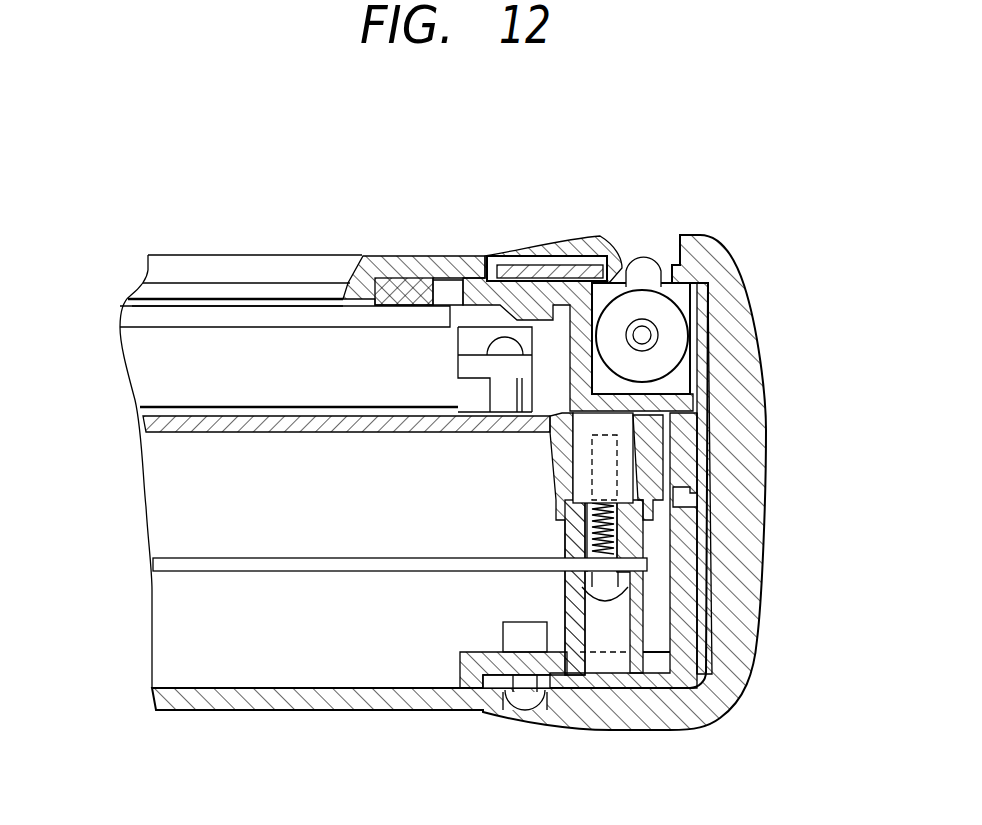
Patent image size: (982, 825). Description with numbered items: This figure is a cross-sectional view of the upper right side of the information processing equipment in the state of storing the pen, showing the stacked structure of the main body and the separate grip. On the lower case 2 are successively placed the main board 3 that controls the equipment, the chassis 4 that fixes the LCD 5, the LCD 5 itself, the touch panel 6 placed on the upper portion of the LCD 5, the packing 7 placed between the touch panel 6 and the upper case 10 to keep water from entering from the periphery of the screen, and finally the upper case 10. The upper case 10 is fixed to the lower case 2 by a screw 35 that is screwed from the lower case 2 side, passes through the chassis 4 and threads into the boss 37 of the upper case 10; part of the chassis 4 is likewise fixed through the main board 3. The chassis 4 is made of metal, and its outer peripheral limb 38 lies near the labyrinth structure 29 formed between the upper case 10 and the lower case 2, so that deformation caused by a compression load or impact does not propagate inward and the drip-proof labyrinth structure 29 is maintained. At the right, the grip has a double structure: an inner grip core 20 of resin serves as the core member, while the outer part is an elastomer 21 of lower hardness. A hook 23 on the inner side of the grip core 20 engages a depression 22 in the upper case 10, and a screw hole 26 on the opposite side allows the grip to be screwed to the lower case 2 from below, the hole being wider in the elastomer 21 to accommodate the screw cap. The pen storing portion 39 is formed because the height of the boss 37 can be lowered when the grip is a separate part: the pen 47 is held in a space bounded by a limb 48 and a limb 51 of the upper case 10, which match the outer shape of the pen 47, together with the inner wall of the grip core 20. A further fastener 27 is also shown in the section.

The lower case 2 is at (397, 705).
The main board 3 is at (210, 560).
The chassis 4 is at (207, 425).
The LCD 5 is at (163, 370).
The touch panel 6 is at (248, 315).
The packing 7 is at (397, 283).
The upper case 10 is at (450, 260).
The grip core 20 is at (703, 630).
The elastomer 21 is at (748, 458).
The depression 22 is at (562, 237).
The hook 23 is at (517, 297).
The screw hole 26 is at (563, 707).
The screw 27 is at (533, 700).
The labyrinth structure 29 is at (700, 537).
The screw 35 is at (660, 700).
The boss 37 is at (615, 428).
The outer peripheral limb 38 is at (657, 477).
The pen storing portion 39 is at (652, 250).
The pen 47 is at (670, 303).
The limb 48 is at (597, 368).
The limb 51 is at (672, 387).